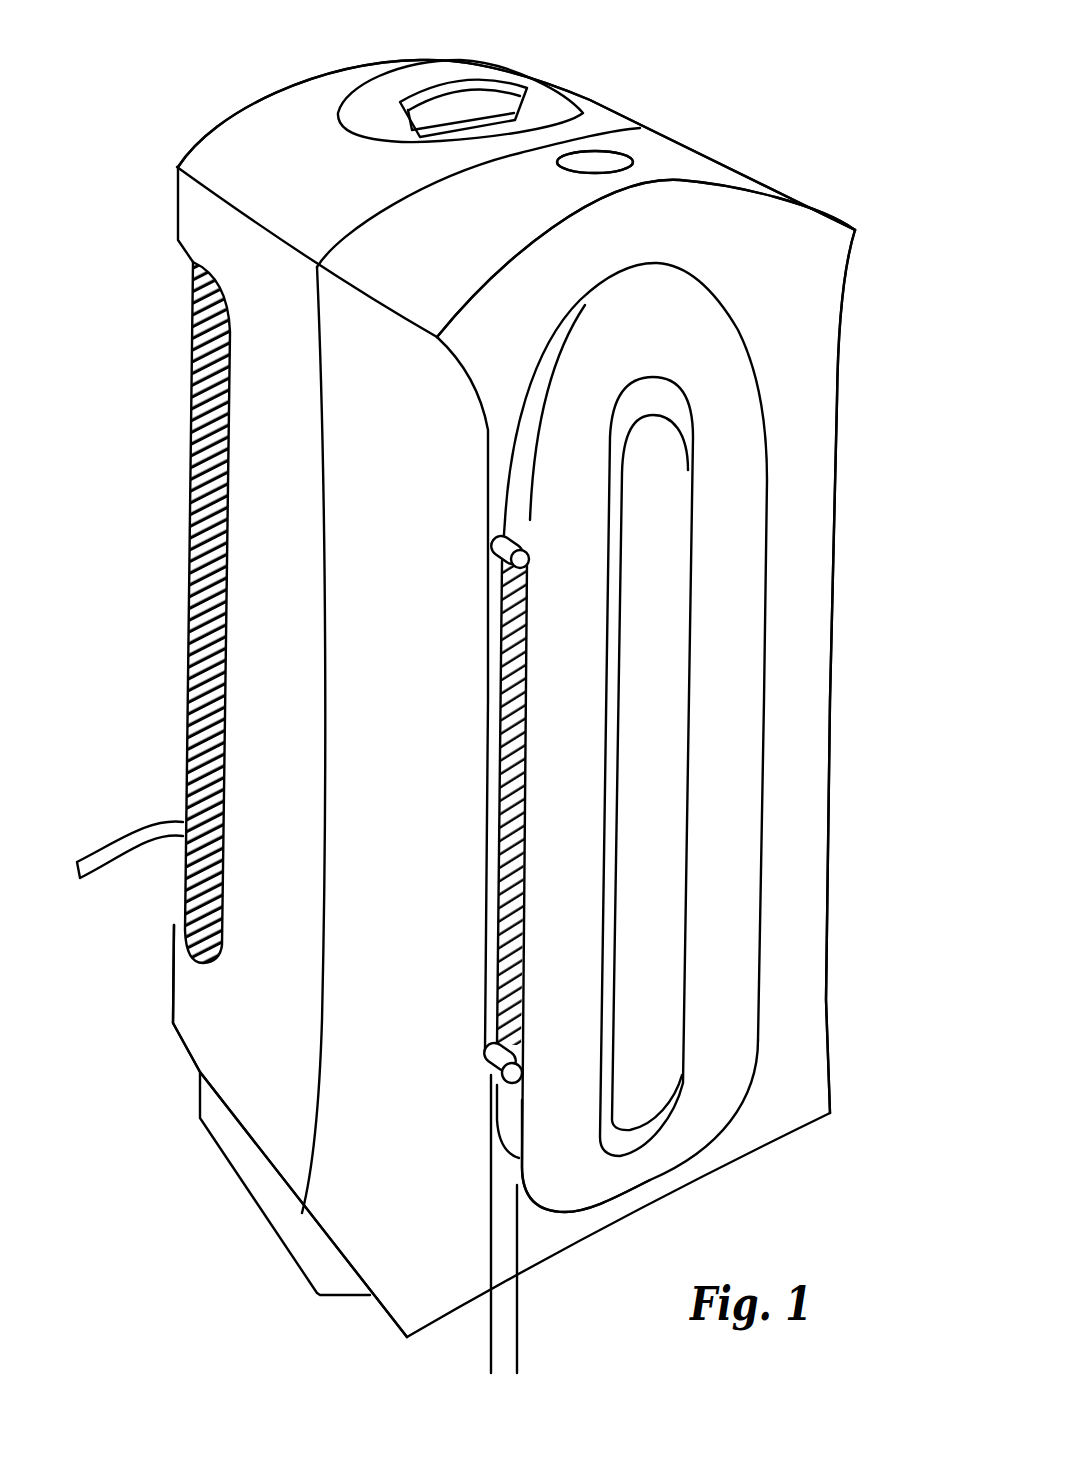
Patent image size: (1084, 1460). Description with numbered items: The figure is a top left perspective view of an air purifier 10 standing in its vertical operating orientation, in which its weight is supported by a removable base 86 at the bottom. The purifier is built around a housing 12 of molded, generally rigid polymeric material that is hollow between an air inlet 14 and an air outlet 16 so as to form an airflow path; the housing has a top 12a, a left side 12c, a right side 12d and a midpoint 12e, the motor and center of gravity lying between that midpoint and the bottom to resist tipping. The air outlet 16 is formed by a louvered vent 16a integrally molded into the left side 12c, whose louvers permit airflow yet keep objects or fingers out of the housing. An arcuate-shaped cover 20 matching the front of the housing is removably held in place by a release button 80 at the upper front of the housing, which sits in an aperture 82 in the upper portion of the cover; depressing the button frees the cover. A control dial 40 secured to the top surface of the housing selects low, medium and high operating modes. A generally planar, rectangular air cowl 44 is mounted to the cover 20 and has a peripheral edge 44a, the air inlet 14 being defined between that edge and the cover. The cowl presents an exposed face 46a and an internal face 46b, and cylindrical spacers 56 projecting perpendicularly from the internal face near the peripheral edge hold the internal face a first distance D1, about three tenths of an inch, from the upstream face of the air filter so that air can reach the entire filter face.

The air purifier 10 is at (797, 82).
The housing 12 is at (252, 160).
The top 12a is at (303, 110).
The left side 12c is at (273, 697).
The right side 12d is at (785, 192).
The midpoint 12e is at (833, 685).
The air inlet 14 is at (548, 308).
The air outlet 16 is at (153, 475).
The louvered vent 16a is at (215, 382).
The cover 20 is at (427, 283).
The control dial 40 is at (468, 92).
The air cowl 44 is at (697, 343).
The peripheral edge 44a is at (517, 1127).
The exposed face 46a is at (742, 413).
The internal face 46b is at (662, 258).
The spacers 56 is at (503, 545).
The release button 80 is at (612, 162).
The aperture 82 is at (607, 147).
The base 86 is at (257, 1183).
The first distance D1 is at (433, 1358).